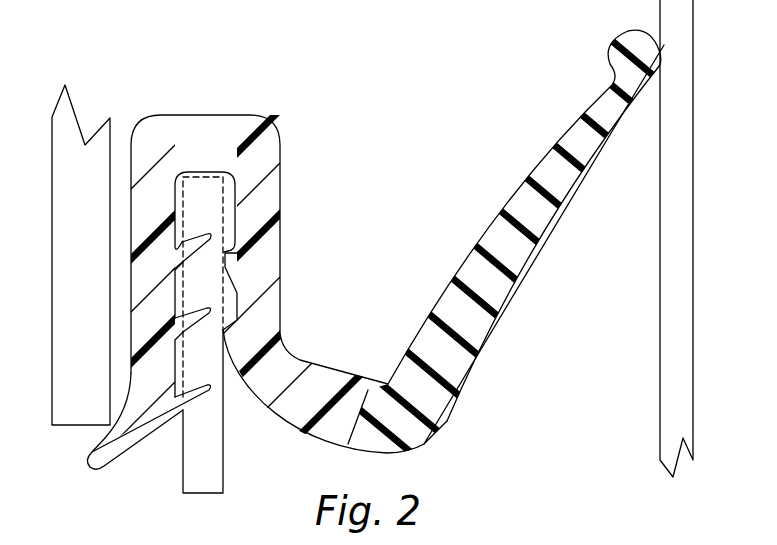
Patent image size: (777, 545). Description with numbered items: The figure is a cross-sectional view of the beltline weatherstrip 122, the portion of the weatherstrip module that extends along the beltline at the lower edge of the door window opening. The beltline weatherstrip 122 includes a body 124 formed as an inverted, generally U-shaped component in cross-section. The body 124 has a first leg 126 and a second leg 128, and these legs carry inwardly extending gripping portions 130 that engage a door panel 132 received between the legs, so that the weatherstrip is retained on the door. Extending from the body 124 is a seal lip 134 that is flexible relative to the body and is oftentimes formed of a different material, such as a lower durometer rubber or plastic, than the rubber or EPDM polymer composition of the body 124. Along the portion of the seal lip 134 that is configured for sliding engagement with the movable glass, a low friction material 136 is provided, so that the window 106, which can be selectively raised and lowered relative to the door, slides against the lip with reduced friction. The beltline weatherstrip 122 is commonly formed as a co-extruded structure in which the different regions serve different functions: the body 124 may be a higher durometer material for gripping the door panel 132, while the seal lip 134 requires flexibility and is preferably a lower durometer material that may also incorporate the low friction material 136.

The window 106 is at (673, 358).
The beltline weatherstrip 122 is at (191, 64).
The body 124 is at (317, 269).
The first leg 126 is at (128, 440).
The second leg 128 is at (270, 300).
The gripping portions 130 is at (193, 240).
The door panel 132 is at (208, 460).
The seal lip 134 is at (552, 170).
The low friction material 136 is at (523, 293).